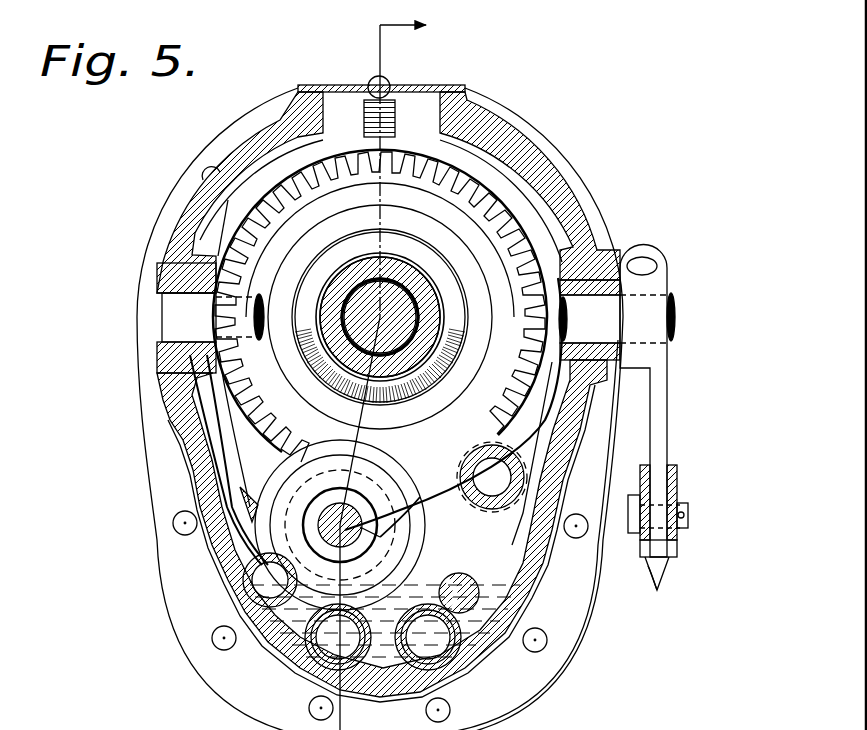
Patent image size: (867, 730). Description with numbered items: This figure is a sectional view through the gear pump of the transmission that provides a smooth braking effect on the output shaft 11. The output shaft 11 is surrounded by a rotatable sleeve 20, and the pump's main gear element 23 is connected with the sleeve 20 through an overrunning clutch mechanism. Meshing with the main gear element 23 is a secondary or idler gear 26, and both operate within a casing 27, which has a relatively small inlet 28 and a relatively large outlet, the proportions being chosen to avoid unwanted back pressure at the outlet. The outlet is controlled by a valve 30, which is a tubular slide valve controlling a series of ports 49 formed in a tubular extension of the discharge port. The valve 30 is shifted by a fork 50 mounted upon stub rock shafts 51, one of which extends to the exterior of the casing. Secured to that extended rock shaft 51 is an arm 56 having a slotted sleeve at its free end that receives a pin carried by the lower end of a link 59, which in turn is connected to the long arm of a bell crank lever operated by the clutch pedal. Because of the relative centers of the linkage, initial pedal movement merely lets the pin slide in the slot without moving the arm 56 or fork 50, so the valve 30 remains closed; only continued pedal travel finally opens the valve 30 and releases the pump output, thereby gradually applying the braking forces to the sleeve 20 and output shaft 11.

The output shaft 11 is at (384, 290).
The sleeve 20 is at (341, 281).
The main gear element 23 is at (480, 200).
The secondary or idler gear 26 is at (372, 566).
The casing 27 is at (518, 540).
The small inlet 28 is at (462, 577).
The valve 30 is at (315, 480).
The ports 49 is at (412, 516).
The fork 50 is at (244, 441).
The stub rock shafts 51 is at (678, 313).
The arm 56 is at (666, 414).
The link 59 is at (657, 583).